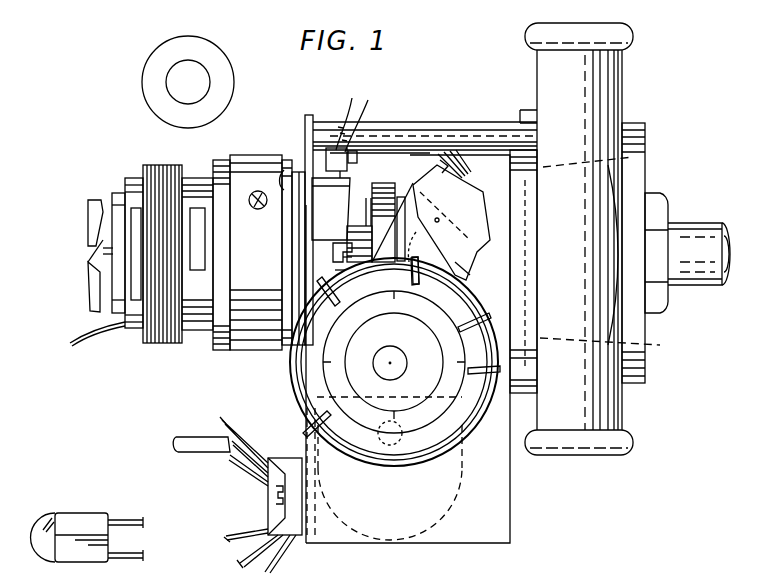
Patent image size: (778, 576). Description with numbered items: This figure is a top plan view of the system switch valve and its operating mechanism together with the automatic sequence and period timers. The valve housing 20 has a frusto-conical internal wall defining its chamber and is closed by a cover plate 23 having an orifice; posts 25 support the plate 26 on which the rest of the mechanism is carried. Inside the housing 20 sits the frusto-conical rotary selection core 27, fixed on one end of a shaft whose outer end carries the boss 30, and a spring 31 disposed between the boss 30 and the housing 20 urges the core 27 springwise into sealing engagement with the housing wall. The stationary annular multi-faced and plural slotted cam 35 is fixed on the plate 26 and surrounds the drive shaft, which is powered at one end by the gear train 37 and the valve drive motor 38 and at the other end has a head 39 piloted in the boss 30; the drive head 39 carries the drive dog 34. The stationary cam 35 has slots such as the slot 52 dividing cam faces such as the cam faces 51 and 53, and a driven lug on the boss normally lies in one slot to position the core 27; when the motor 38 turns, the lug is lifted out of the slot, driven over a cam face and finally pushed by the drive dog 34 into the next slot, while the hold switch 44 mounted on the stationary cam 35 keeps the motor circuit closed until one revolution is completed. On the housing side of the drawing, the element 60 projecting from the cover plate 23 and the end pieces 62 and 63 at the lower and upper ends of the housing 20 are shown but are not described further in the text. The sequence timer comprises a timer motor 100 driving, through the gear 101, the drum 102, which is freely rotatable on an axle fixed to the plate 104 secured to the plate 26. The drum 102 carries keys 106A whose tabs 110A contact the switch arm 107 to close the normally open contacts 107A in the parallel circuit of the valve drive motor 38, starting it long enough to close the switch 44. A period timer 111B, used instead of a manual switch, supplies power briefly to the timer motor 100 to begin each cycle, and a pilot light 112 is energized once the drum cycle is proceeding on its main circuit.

The valve housing 20 is at (622, 400).
The cover plate 23 is at (651, 197).
The posts 25 is at (458, 130).
The plate 26 is at (310, 146).
The rotary selection core 27 is at (632, 330).
The boss 30 is at (385, 183).
The spring 31 is at (410, 196).
The drive dog 34 is at (360, 198).
The stationary annular multi-faced and plural slotted cam 35 is at (324, 197).
The gear train 37 is at (258, 167).
The motor 38 is at (161, 172).
The head 39 is at (350, 257).
The switch 44 is at (331, 150).
The cam face 51 is at (345, 226).
The slot 52 is at (336, 254).
The cam face 53 is at (343, 270).
The output shaft 60 is at (689, 233).
The lower cap 62 is at (590, 456).
The upper cap 63 is at (612, 22).
The timer motor 100 is at (418, 522).
The gear 101 is at (383, 462).
The drum 102 is at (462, 420).
The plate 104 is at (503, 505).
The keys 106A is at (420, 246).
The switch arm 107 is at (470, 270).
The contacts 107A is at (455, 182).
The tabs 110A is at (418, 263).
The period timer 111B is at (155, 98).
The pilot light 112 is at (95, 521).